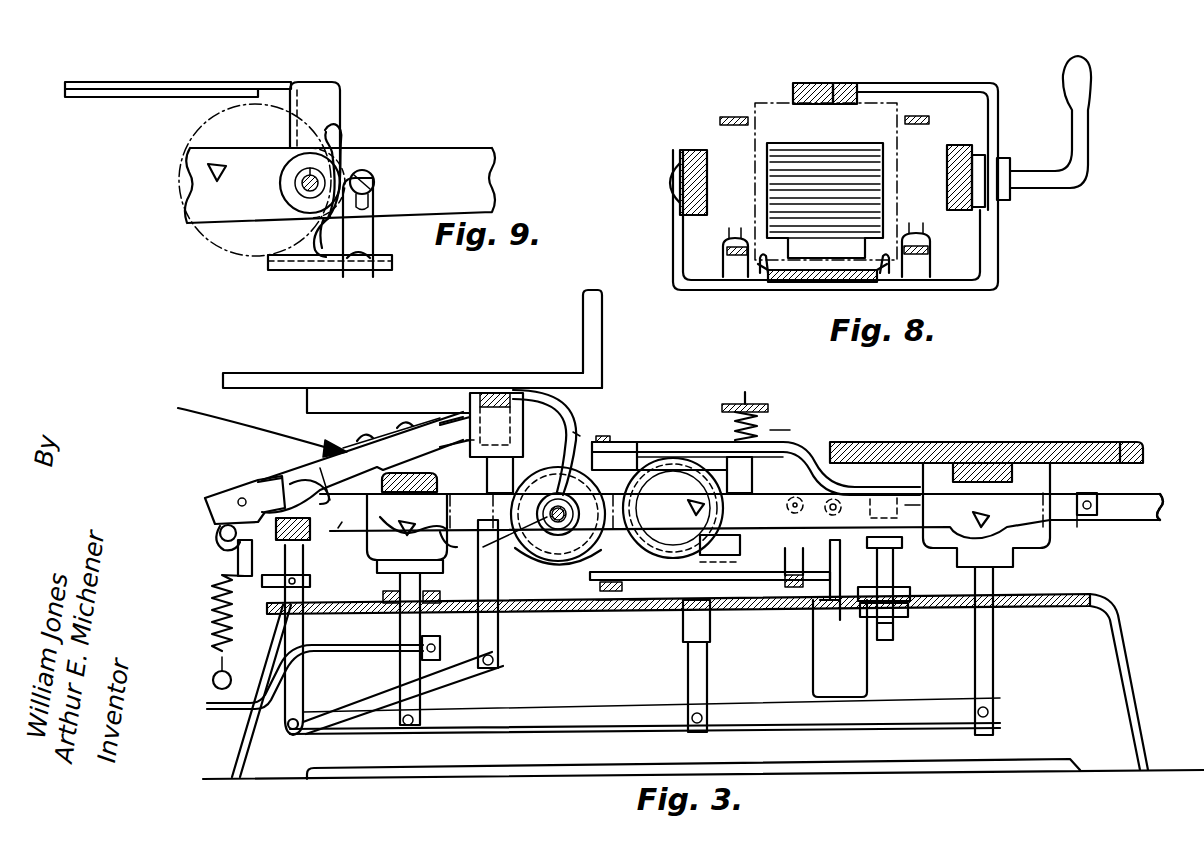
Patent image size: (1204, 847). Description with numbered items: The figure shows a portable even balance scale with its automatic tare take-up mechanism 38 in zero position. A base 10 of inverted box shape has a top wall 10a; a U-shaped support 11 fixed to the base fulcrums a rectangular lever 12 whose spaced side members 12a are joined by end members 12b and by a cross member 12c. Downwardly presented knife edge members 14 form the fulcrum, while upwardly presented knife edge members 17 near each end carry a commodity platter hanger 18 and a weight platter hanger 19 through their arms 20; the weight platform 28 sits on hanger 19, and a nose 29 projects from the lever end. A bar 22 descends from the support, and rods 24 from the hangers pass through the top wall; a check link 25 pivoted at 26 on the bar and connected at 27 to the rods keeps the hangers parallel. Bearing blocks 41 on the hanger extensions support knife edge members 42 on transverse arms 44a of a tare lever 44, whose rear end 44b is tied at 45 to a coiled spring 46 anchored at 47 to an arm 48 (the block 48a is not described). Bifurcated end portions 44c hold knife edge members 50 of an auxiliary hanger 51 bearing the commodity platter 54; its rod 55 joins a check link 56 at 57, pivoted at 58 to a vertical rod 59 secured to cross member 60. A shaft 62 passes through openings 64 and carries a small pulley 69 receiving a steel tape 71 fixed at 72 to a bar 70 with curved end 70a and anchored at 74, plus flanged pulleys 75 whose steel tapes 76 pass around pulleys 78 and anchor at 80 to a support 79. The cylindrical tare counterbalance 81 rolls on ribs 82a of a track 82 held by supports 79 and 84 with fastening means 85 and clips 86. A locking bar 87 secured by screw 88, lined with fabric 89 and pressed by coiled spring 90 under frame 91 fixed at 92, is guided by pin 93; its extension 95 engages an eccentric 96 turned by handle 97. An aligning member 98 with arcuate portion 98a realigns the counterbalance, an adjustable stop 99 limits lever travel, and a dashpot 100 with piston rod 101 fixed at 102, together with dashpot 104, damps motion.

In FIG. 3, the base 10 is at (230, 750).
In FIG. 3, the top wall 10a is at (1020, 595).
In FIG. 3, the support 11 is at (636, 604).
In FIG. 3, the lever 12 is at (805, 478).
In FIG. 9, the side members 12a is at (470, 168).
In FIG. 8, the side members 12a is at (957, 150).
In FIG. 3, the side members 12a is at (767, 512).
In FIG. 3, the end members 12b is at (340, 528).
In FIG. 3, the cross member 12c is at (925, 500).
In FIG. 9, the knife edge member 14 is at (208, 168).
In FIG. 3, the knife edge member 14 is at (688, 506).
In FIG. 3, the knife edge member 17 is at (418, 524).
In FIG. 3, the commodity platter hanger 18 is at (375, 557).
In FIG. 3, the weight platter hanger 19 is at (1035, 470).
In FIG. 3, the arms 20 is at (440, 480).
In FIG. 3, the bar 22 is at (708, 657).
In FIG. 3, the rods 24 is at (522, 692).
In FIG. 3, the check link 25 is at (640, 706).
In FIG. 3, the pivotal mounting 26 is at (700, 728).
In FIG. 3, the pivotal connection 27 is at (408, 727).
In FIG. 3, the weight platform 28 is at (1118, 442).
In FIG. 3, the extension or nose 29 is at (1125, 520).
In FIG. 3, the automatic tare take-up mechanism 38 is at (244, 425).
In FIG. 3, the bearing blocks 41 is at (325, 470).
In FIG. 3, the knife edge members 42 is at (298, 478).
In FIG. 3, the tare lever 44 is at (360, 445).
In FIG. 3, the transverse arms 44a is at (262, 492).
In FIG. 3, the rear end 44b is at (212, 510).
In FIG. 3, the bifurcated end portions 44c is at (410, 424).
In FIG. 3, the spring connection 45 is at (220, 532).
In FIG. 3, the coiled spring 46 is at (238, 572).
In FIG. 3, the spring connection 47 is at (215, 677).
In FIG. 3, the arm 48 is at (350, 653).
In FIG. 3, the block 48a is at (440, 646).
In FIG. 3, the knife edge member 50 is at (495, 425).
In FIG. 3, the auxiliary hanger 51 is at (515, 440).
In FIG. 3, the commodity platter 54 is at (250, 372).
In FIG. 3, the rod 55 is at (500, 632).
In FIG. 3, the check link 56 is at (360, 720).
In FIG. 3, the pivotal connection 57 is at (505, 662).
In FIG. 3, the pivotal connection 58 is at (294, 731).
In FIG. 3, the rod 59 is at (306, 617).
In FIG. 3, the cross member 60 is at (276, 532).
In FIG. 3, the shaft 62 is at (550, 528).
In FIG. 3, the openings 64 is at (493, 550).
In FIG. 3, the pulley 69 is at (580, 434).
In FIG. 3, the bar 70 is at (438, 430).
In FIG. 3, the curved end 70a is at (540, 390).
In FIG. 3, the steel tape 71 is at (602, 300).
In FIG. 3, the tape fixing 72 is at (470, 440).
In FIG. 3, the tape fixing 74 is at (556, 500).
In FIG. 3, the flanged pulley 75 is at (555, 564).
In FIG. 8, the steel tape 76 is at (730, 116).
In FIG. 3, the steel tape 76 is at (606, 438).
In FIG. 3, the pulleys 78 is at (730, 556).
In FIG. 9, the support 79 is at (360, 272).
In FIG. 8, the support 79 is at (958, 282).
In FIG. 3, the support 79 is at (602, 604).
In FIG. 8, the tape anchorage 80 is at (733, 238).
In FIG. 3, the tape anchorage 80 is at (600, 586).
In FIG. 9, the tare counterbalance 81 is at (220, 235).
In FIG. 8, the tare counterbalance 81 is at (770, 130).
In FIG. 3, the tare counterbalance 81 is at (662, 468).
In FIG. 9, the track 82 is at (283, 270).
In FIG. 8, the track 82 is at (830, 282).
In FIG. 3, the track 82 is at (756, 582).
In FIG. 8, the ribs 82a is at (776, 276).
In FIG. 3, the support 84 is at (805, 592).
In FIG. 9, the fastening means 85 is at (375, 184).
In FIG. 8, the fastening means 85 is at (685, 186).
In FIG. 8, the clips 86 is at (760, 266).
In FIG. 3, the clips 86 is at (802, 574).
In FIG. 9, the locking bar 87 is at (160, 82).
In FIG. 8, the locking bar 87 is at (816, 83).
In FIG. 3, the locking bar 87 is at (690, 442).
In FIG. 3, the screw 88 is at (890, 495).
In FIG. 9, the fabric 89 is at (130, 97).
In FIG. 8, the fabric 89 is at (842, 85).
In FIG. 3, the fabric 89 is at (650, 452).
In FIG. 3, the coiled spring 90 is at (770, 430).
In FIG. 3, the inverted U-shaped frame 91 is at (752, 405).
In FIG. 3, the frame securing 92 is at (754, 473).
In FIG. 3, the pin 93 is at (743, 392).
In FIG. 9, the extension 95 is at (314, 92).
In FIG. 8, the extension 95 is at (992, 96).
In FIG. 3, the extension 95 is at (612, 442).
In FIG. 9, the eccentric 96 is at (290, 172).
In FIG. 8, the eccentric 96 is at (1008, 199).
In FIG. 9, the handle 97 is at (302, 188).
In FIG. 8, the handle 97 is at (1082, 122).
In FIG. 9, the aligning member 98 is at (334, 133).
In FIG. 8, the aligning member 98 is at (812, 160).
In FIG. 8, the arcuate portion 98a is at (822, 200).
In FIG. 3, the adjustable stop 99 is at (900, 578).
In FIG. 3, the dashpot 100 is at (868, 662).
In FIG. 3, the piston rod 101 is at (828, 604).
In FIG. 3, the piston rod fixing 102 is at (838, 500).
In FIG. 3, the dashpot 104 is at (215, 614).